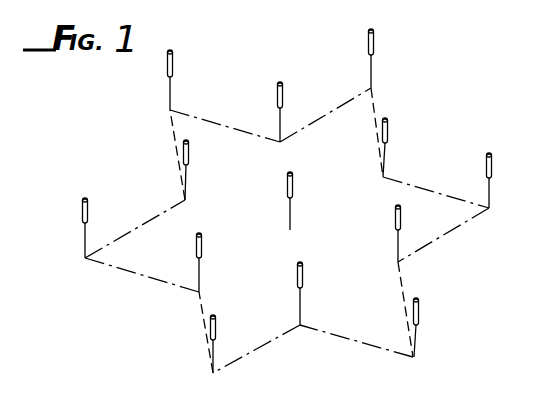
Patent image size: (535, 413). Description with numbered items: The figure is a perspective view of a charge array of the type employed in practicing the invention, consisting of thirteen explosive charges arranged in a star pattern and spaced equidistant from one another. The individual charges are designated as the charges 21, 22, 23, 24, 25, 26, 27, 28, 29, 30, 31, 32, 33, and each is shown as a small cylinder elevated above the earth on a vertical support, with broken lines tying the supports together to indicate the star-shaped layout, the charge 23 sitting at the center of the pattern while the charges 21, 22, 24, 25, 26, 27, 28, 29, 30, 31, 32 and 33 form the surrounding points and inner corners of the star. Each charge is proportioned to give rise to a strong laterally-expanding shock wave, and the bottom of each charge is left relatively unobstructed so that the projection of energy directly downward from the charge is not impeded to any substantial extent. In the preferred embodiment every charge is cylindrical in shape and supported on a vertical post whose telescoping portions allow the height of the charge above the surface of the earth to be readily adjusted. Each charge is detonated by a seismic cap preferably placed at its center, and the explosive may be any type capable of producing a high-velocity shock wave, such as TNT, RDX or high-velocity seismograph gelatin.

The charge 21 is at (216, 330).
The charge 22 is at (202, 250).
The charge 23 is at (293, 187).
The charge 24 is at (283, 95).
The charge 25 is at (374, 47).
The charge 26 is at (388, 128).
The charge 27 is at (401, 220).
The charge 28 is at (303, 278).
The charge 29 is at (189, 152).
The charge 30 is at (88, 214).
The charge 31 is at (173, 68).
The charge 32 is at (492, 166).
The charge 33 is at (419, 312).